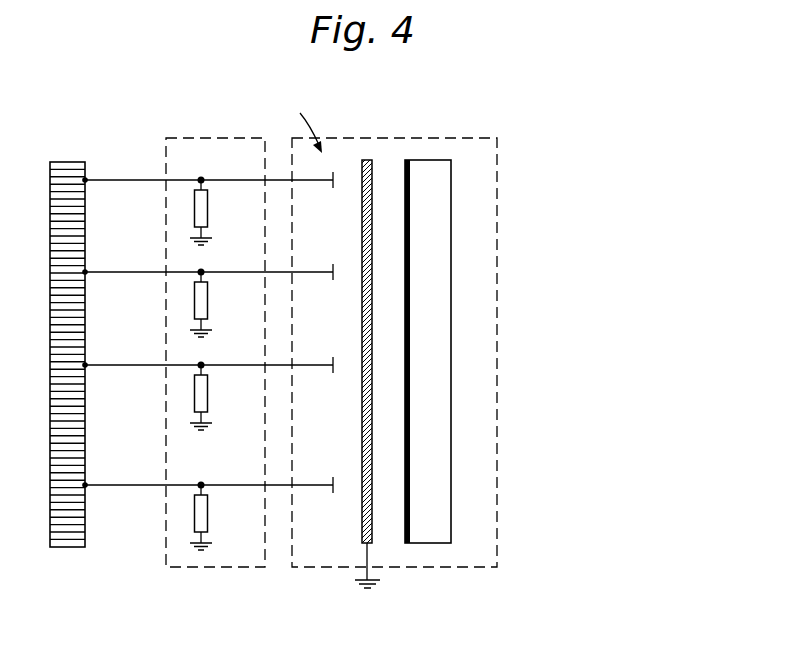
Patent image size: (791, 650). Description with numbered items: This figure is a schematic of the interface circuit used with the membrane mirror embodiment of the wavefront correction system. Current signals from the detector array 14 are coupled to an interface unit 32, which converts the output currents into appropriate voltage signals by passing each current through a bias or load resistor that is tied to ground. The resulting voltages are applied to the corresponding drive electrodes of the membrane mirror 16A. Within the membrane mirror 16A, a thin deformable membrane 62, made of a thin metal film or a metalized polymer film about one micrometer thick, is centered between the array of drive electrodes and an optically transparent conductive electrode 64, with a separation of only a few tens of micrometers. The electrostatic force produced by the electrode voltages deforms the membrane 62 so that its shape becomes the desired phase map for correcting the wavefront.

The detector array 14 is at (77, 549).
The interface unit 32 is at (238, 568).
The membrane mirror 16A is at (430, 568).
The membrane 62 is at (366, 158).
The optically transparent conductive electrode 64 is at (452, 258).